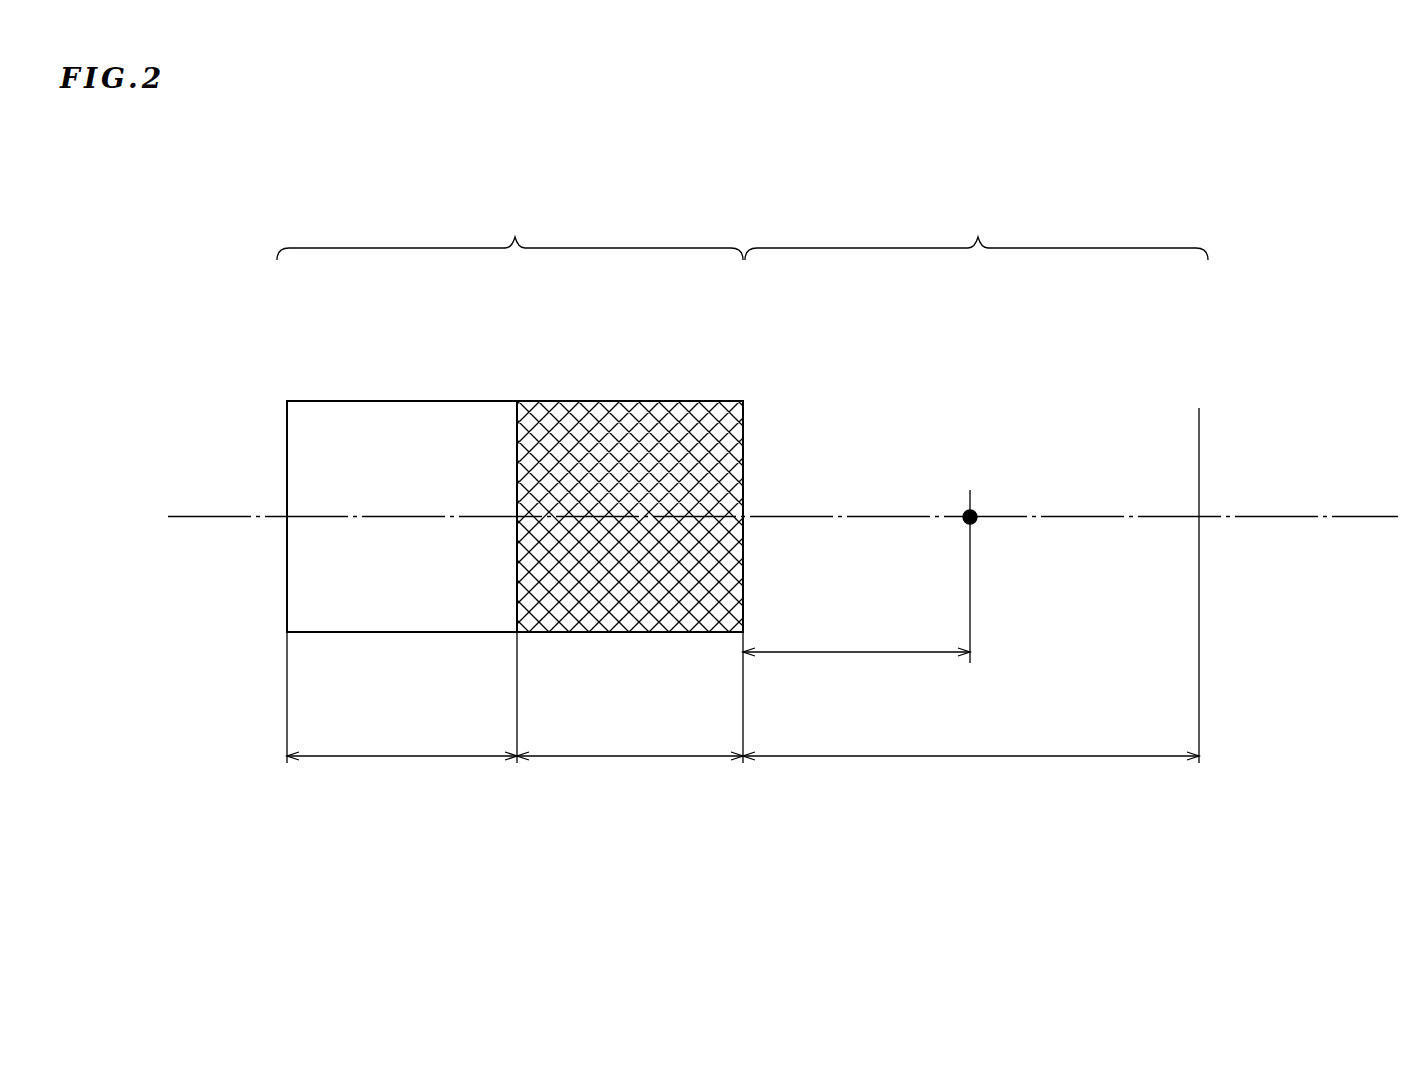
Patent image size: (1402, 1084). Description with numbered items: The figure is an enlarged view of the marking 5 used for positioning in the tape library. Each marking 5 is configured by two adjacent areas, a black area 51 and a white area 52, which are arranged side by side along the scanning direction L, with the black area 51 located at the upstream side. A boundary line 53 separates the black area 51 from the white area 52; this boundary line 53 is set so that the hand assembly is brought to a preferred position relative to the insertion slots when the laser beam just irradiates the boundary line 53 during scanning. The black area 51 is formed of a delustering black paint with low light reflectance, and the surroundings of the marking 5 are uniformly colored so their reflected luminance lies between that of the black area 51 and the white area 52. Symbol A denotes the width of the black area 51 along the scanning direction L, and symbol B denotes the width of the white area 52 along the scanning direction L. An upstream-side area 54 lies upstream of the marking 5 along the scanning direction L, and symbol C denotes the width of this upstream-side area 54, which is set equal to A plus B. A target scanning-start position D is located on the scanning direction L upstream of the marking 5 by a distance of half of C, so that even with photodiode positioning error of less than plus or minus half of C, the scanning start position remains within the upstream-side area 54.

The marking 5 is at (577, 248).
The upstream-side area 54 is at (1045, 248).
The black area 51 is at (592, 400).
The white area 52 is at (396, 400).
The boundary line 53 is at (517, 442).
The target scanning-start position D is at (978, 512).
The scanning direction L is at (1302, 520).
The width of the black area A is at (630, 758).
The width of the white area B is at (425, 758).
The width of the upstream-side area C is at (997, 758).